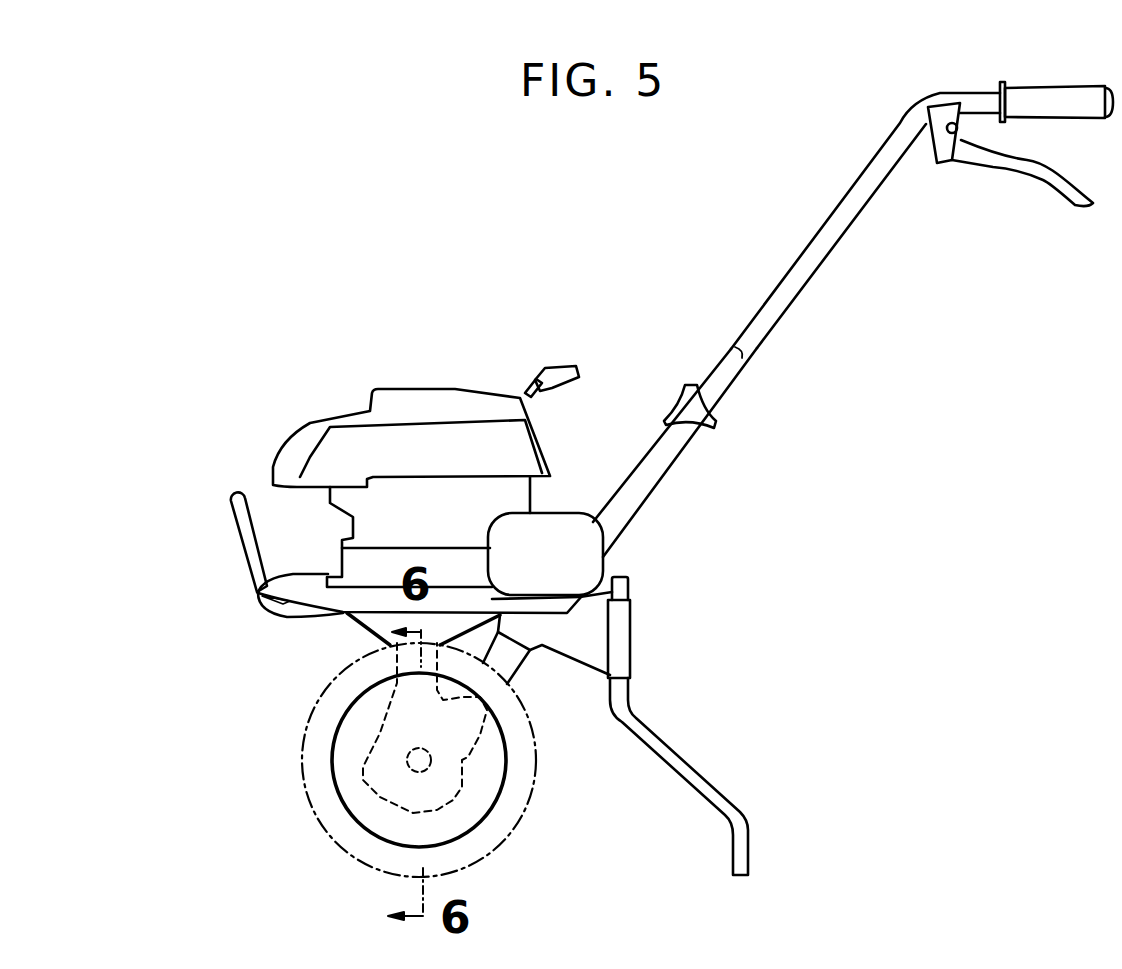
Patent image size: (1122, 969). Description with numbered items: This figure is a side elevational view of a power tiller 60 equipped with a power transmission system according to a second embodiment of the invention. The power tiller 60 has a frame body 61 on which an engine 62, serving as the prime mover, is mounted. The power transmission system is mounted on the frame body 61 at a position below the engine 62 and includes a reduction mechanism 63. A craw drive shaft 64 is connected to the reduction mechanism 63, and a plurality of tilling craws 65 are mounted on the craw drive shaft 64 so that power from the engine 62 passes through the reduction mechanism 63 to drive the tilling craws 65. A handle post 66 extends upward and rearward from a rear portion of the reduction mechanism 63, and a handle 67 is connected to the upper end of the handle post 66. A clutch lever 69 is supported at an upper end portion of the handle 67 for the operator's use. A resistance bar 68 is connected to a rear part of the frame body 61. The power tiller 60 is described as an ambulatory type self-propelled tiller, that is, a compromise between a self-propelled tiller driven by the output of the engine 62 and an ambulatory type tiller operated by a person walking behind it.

The power tiller 60 is at (433, 267).
The frame body 61 is at (353, 623).
The engine 62 is at (315, 417).
The reduction mechanism 63 is at (370, 750).
The craw drive shaft 64 is at (407, 767).
The tilling craws 65 is at (528, 800).
The handle post 66 is at (655, 472).
The handle 67 is at (807, 280).
The resistance bar 68 is at (703, 782).
The clutch lever 69 is at (1047, 183).